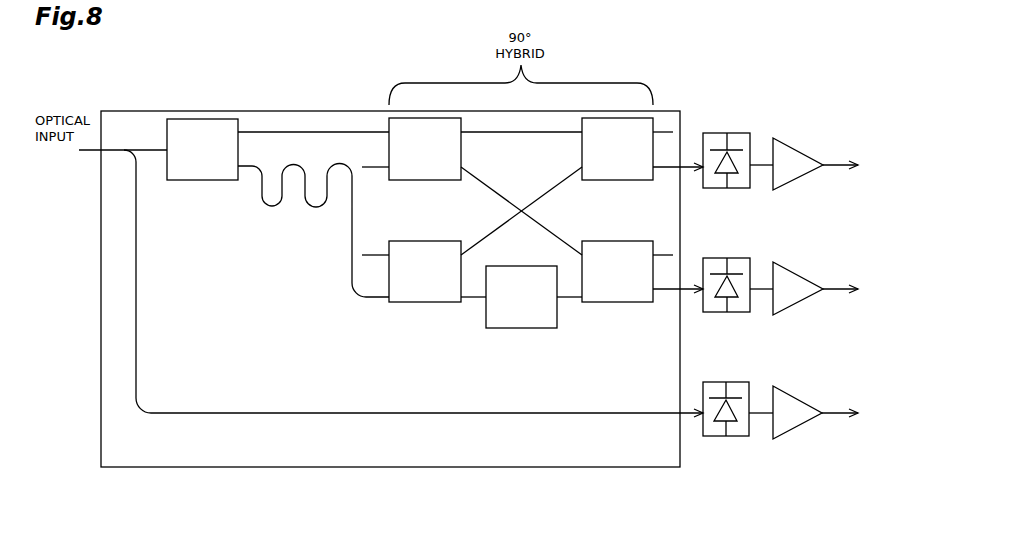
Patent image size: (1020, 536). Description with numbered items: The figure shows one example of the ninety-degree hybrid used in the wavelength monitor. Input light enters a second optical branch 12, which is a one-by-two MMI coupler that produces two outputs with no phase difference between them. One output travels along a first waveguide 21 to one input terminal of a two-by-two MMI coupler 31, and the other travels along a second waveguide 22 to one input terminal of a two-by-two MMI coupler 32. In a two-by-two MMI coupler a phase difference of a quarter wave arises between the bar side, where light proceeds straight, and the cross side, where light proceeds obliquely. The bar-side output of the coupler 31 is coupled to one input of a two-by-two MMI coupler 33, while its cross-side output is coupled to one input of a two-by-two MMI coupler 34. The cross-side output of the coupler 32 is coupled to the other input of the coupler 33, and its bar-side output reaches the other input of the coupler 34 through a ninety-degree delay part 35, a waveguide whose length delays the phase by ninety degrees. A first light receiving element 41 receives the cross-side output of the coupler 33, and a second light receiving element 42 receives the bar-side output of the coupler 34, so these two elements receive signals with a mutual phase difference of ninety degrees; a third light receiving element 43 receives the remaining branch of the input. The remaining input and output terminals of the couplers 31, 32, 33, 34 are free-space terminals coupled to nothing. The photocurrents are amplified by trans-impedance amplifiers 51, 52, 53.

The second optical branch 12 is at (191, 180).
The first waveguide 21 is at (305, 132).
The second waveguide 22 is at (272, 206).
The 2×2 MMI coupler 31 is at (415, 180).
The 2×2 MMI coupler 32 is at (427, 302).
The 2×2 MMI coupler 33 is at (622, 180).
The 2×2 MMI coupler 34 is at (616, 302).
The 90° delay part 35 is at (520, 328).
The first light receiving element 41 is at (752, 133).
The second light receiving element 42 is at (752, 258).
The third light receiving element 43 is at (751, 382).
The trans-impedance amplifier 51 is at (806, 153).
The trans-impedance amplifier 52 is at (806, 277).
The trans-impedance amplifier 53 is at (806, 401).